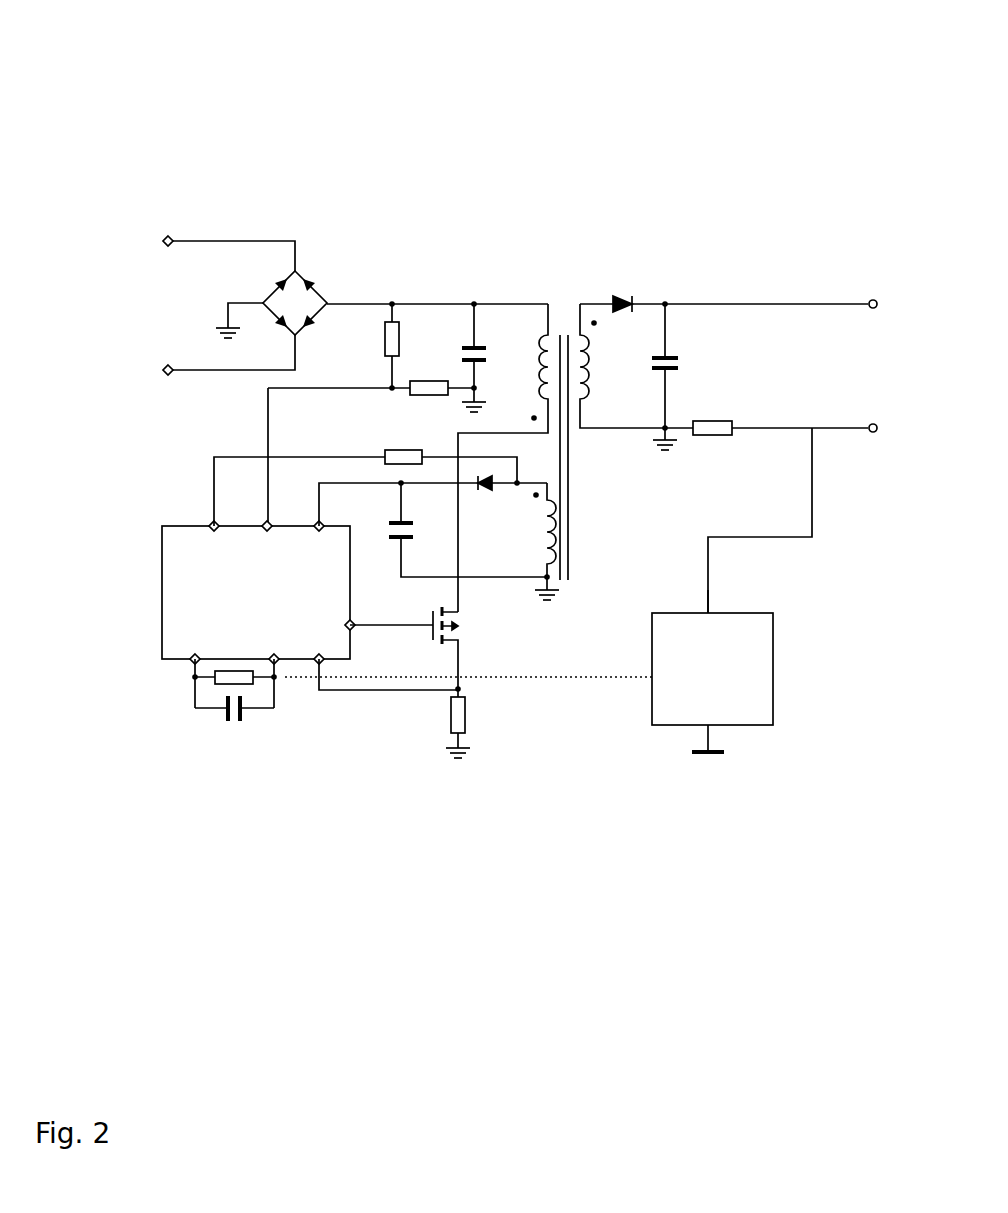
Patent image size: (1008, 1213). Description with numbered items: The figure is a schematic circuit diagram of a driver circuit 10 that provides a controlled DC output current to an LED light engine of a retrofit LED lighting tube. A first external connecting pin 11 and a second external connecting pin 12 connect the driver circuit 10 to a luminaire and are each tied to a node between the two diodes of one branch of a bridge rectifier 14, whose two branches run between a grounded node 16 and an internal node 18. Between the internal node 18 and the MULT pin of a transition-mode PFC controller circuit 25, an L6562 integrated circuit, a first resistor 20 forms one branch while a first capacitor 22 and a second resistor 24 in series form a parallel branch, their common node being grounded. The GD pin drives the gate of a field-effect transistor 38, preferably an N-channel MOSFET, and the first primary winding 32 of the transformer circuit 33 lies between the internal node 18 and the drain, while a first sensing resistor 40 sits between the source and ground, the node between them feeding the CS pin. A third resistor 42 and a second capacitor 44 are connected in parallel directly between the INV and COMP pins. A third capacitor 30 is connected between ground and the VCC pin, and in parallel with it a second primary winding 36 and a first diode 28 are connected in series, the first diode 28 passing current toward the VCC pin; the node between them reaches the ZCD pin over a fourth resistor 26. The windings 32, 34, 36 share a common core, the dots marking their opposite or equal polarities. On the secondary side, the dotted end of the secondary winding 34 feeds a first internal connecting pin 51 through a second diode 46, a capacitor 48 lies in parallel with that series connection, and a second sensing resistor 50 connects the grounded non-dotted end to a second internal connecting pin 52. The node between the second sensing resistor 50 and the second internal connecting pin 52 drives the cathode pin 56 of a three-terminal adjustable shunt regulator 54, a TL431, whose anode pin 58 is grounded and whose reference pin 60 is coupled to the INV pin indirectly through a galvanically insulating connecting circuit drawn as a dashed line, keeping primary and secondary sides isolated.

The driver circuit 10 is at (300, 116).
The first external connecting pin 11 is at (171, 236).
The second external connecting pin 12 is at (170, 378).
The bridge rectifier 14 is at (301, 262).
The grounded node 16 is at (248, 304).
The internal node 18 is at (331, 303).
The first resistor 20 is at (392, 352).
The first capacitor 22 is at (474, 338).
The second resistor 24 is at (428, 398).
The transition-mode PFC controller circuit 25 is at (162, 625).
The fourth resistor 26 is at (405, 451).
The first diode 28 is at (489, 496).
The third capacitor 30 is at (395, 546).
The first primary winding 32 is at (537, 296).
The transformer circuit 33 is at (558, 287).
The secondary winding 34 is at (592, 295).
The second primary winding 36 is at (586, 526).
The field-effect transistor 38 is at (469, 640).
The first sensing resistor 40 is at (468, 714).
The third resistor 42 is at (257, 714).
The second capacitor 44 is at (239, 745).
The second diode 46 is at (631, 291).
The capacitor 48 is at (706, 366).
The second sensing resistor 50 is at (716, 437).
The first internal connecting pin 51 is at (872, 299).
The second internal connecting pin 52 is at (874, 433).
The three-terminal adjustable shunt regulator 54 is at (774, 670).
The cathode pin 56 is at (710, 613).
The anode pin 58 is at (710, 726).
The reference pin 60 is at (651, 692).